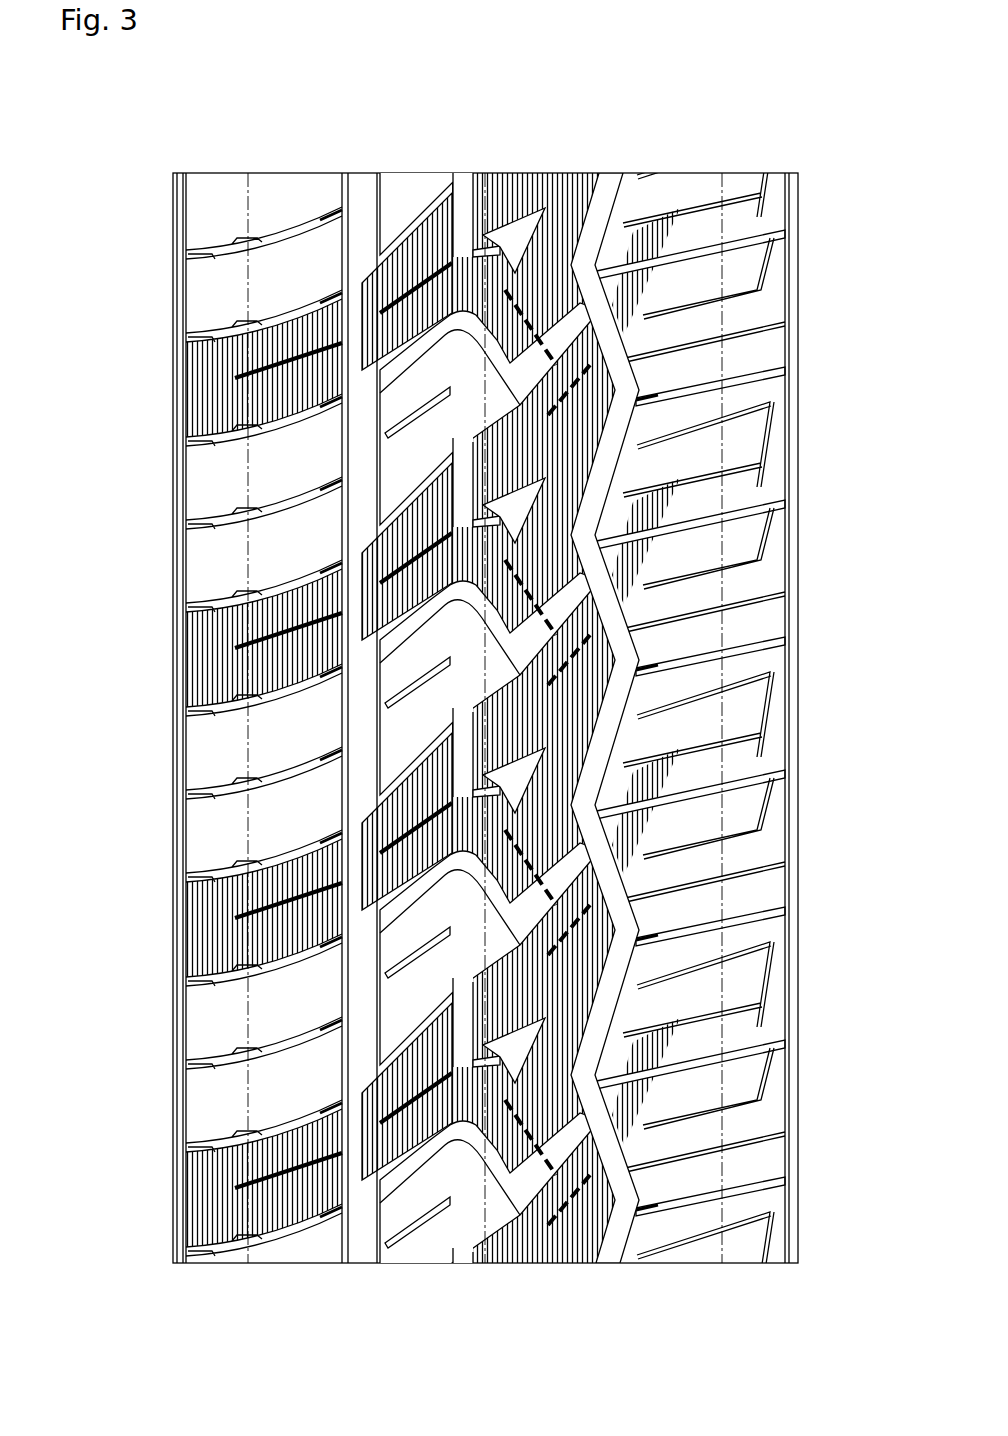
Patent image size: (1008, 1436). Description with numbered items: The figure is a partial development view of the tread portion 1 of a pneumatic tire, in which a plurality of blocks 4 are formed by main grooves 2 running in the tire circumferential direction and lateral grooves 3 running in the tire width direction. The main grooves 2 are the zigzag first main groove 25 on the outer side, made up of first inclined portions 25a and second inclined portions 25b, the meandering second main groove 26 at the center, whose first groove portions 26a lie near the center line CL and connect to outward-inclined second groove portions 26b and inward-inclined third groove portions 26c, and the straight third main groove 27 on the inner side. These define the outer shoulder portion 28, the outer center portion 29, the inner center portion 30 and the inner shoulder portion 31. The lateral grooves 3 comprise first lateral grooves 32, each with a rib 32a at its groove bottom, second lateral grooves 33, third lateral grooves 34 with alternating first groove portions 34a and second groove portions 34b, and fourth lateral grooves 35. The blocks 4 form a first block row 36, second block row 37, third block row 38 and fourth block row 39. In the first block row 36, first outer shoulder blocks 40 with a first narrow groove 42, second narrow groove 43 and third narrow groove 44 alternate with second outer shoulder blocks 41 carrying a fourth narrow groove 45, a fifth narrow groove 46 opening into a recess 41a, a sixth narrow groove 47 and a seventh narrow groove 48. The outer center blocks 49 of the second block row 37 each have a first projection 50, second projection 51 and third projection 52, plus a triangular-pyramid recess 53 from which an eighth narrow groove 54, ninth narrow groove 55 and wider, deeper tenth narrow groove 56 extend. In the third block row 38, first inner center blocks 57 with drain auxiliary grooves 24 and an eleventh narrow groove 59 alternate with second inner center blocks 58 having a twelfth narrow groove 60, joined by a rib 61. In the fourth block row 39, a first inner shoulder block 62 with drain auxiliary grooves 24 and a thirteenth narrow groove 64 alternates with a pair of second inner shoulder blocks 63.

The tread portion 1 is at (215, 175).
The main grooves 2 is at (628, 104).
The lateral grooves 3 is at (277, 1323).
The blocks 4 is at (540, 235).
The drain auxiliary grooves 24 is at (690, 500).
The first main groove 25 is at (612, 200).
The first inclined portions 25a is at (625, 230).
The second inclined portions 25b is at (680, 250).
The second main groove 26 is at (463, 235).
The first groove portions 26a is at (460, 235).
The second groove portions 26b is at (395, 260).
The third groove portions 26c is at (250, 240).
The third main groove 27 is at (372, 210).
The outer shoulder portion 28 is at (795, 757).
The outer center portion 29 is at (620, 1282).
The inner center portion 30 is at (558, 718).
The inner shoulder portion 31 is at (258, 750).
The first lateral grooves 32 is at (700, 1240).
The rib 32a is at (730, 1190).
The second lateral grooves 33 is at (580, 1250).
The third lateral grooves 34 is at (415, 1225).
The first groove portions 34a is at (330, 245).
The second groove portions 34b is at (250, 520).
The fourth lateral grooves 35 is at (283, 1250).
The first block row 36 is at (760, 1230).
The second block row 37 is at (600, 1245).
The third block row 38 is at (558, 718).
The fourth block row 39 is at (215, 1250).
The first outer shoulder blocks 40 is at (690, 455).
The second outer shoulder blocks 41 is at (710, 570).
The recess 41a is at (690, 640).
The first narrow groove 42 is at (735, 398).
The second narrow groove 43 is at (720, 470).
The third narrow groove 44 is at (745, 415).
The fourth narrow groove 45 is at (750, 555).
The fifth narrow groove 46 is at (720, 612).
The sixth narrow groove 47 is at (745, 525).
The seventh narrow groove 48 is at (760, 600).
The outer center blocks 49 is at (720, 775).
The first projection 50 is at (660, 745).
The second projection 51 is at (680, 812).
The third projection 52 is at (710, 950).
The recess 53 is at (700, 790).
The eighth narrow groove 54 is at (700, 710).
The ninth narrow groove 55 is at (720, 860).
The tenth narrow groove 56 is at (700, 900).
The first inner center blocks 57 is at (250, 563).
The second inner center blocks 58 is at (255, 480).
The eleventh narrow groove 59 is at (255, 605).
The twelfth narrow groove 60 is at (258, 430).
The rib 61 is at (380, 620).
The first inner shoulder block 62 is at (250, 918).
The second inner shoulder blocks 63 is at (250, 1020).
The thirteenth narrow groove 64 is at (255, 880).
The center line CL is at (501, 688).